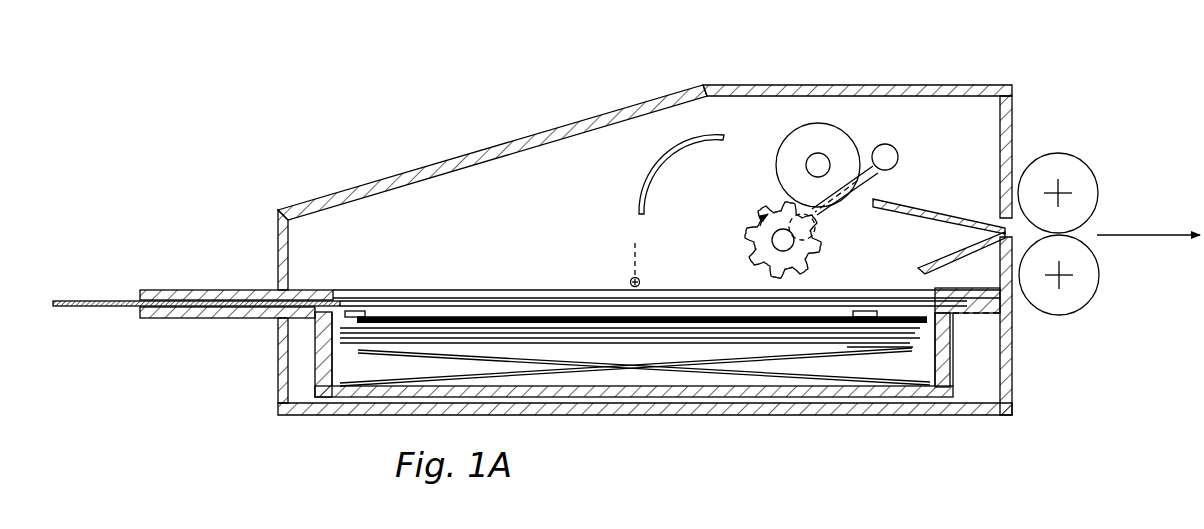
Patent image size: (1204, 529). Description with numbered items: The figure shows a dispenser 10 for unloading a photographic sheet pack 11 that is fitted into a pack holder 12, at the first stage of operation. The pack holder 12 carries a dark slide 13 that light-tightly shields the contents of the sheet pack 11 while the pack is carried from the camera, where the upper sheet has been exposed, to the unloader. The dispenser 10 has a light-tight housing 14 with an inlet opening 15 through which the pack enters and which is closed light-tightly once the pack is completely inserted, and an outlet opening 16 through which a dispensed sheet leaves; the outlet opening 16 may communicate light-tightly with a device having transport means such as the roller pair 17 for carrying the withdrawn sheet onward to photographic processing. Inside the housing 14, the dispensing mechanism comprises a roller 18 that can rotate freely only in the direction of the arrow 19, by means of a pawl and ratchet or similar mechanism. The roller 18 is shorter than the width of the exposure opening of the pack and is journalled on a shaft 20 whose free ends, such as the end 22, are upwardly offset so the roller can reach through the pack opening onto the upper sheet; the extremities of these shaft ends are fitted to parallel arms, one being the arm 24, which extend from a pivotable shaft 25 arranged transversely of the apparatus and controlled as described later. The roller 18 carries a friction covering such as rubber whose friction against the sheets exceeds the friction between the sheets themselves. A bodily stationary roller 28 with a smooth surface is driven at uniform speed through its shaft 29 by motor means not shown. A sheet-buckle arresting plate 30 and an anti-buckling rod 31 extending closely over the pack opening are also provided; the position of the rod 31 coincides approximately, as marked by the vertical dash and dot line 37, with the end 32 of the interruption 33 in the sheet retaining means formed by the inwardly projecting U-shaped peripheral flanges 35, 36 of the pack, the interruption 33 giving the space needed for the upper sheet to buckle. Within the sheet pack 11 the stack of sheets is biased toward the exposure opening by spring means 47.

The dispenser 10 is at (427, 103).
The photographic sheet pack 11 is at (323, 367).
The pack holder 12 is at (317, 327).
The dark slide 13 is at (87, 300).
The light-tight housing 14 is at (497, 221).
The inlet opening 15 is at (297, 353).
The outlet opening 16 is at (982, 230).
The roller pair 17 is at (1063, 257).
The roller 18 is at (748, 243).
The arrow 19 is at (764, 212).
The shaft 20 is at (792, 246).
The free end of shaft 22 is at (800, 238).
The arm 24 is at (872, 181).
The pivotable shaft 25 is at (893, 161).
The bodily stationary roller 28 is at (795, 147).
The shaft 29 is at (818, 165).
The sheet-buckle arresting plate 30 is at (657, 166).
The rod 31 is at (630, 281).
The end of the interruption 32 is at (617, 312).
The interruption 33 is at (695, 311).
The peripheral flange 35 is at (367, 311).
The peripheral flange 36 is at (873, 311).
The vertical dash and dot line 37 is at (640, 256).
The spring means 47 is at (685, 373).